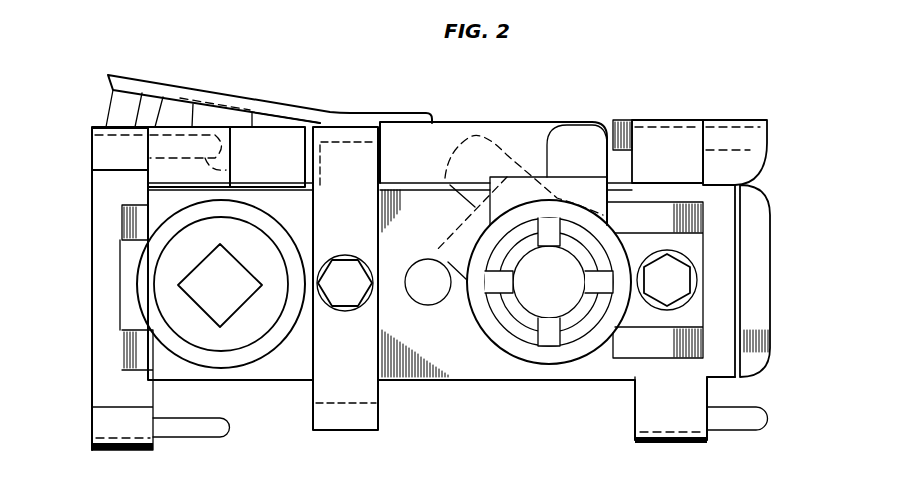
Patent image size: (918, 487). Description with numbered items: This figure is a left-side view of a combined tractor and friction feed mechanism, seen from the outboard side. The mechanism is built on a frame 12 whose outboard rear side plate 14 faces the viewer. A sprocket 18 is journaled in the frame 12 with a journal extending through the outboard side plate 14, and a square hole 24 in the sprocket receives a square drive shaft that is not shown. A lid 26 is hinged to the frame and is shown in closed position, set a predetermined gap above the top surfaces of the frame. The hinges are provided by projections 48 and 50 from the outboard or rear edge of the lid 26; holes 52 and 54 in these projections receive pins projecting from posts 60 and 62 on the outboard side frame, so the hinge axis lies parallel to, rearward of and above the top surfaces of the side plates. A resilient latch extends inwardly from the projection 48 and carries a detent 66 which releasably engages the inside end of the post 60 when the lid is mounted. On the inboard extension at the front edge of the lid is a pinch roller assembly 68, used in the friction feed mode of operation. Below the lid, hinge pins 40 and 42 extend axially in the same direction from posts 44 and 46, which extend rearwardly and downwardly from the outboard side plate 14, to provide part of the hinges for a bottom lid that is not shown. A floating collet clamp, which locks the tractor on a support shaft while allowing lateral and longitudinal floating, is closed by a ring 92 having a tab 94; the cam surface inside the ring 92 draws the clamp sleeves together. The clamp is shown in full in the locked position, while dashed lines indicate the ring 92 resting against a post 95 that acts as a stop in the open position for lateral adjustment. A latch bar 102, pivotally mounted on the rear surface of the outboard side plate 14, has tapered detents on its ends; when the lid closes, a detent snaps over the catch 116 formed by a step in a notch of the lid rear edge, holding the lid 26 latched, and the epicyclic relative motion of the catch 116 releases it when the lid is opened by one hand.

The frame 12 is at (418, 389).
The outboard rear side plate 14 is at (592, 378).
The sprocket 18 is at (277, 307).
The square hole 24 is at (200, 263).
The lid 26 is at (490, 122).
The hinge pin 40 is at (762, 420).
The hinge pin 42 is at (218, 428).
The post 44 is at (635, 427).
The post 46 is at (93, 433).
The projection 48 is at (723, 120).
The projection 50 is at (160, 100).
The hole 52 is at (743, 152).
The hole 54 is at (228, 170).
The post 60 is at (657, 120).
The post 62 is at (93, 127).
The detent 66 is at (622, 122).
The pinch roller assembly 68 is at (296, 96).
The ring 92 is at (522, 353).
The tab 94 is at (575, 130).
The post 95 is at (418, 305).
The latch bar 102 is at (313, 237).
The catch 116 is at (325, 170).